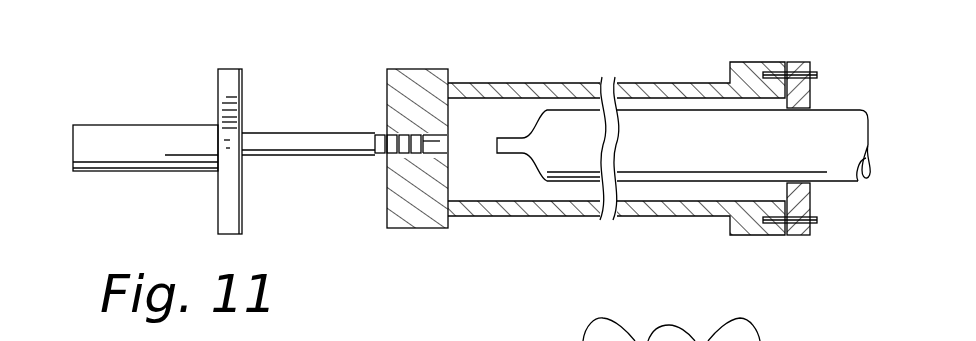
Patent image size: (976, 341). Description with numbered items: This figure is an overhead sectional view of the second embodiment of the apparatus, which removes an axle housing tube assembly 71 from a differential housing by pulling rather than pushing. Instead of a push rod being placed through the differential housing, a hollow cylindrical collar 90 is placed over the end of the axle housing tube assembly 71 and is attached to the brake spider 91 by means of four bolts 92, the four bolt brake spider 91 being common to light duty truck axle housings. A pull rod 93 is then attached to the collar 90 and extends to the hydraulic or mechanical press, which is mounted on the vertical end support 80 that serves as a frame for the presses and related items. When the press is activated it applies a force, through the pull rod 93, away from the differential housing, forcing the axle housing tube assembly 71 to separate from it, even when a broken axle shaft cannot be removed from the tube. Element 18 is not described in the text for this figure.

The plunger rod 18 is at (123, 125).
The vertical end support 80 is at (242, 70).
The pull rod 93 is at (312, 133).
The brake spider 91 is at (462, 83).
The hollow cylindrical collar 90 is at (743, 62).
The bolt 92 is at (815, 72).
The axle housing tube assembly 71 is at (838, 183).